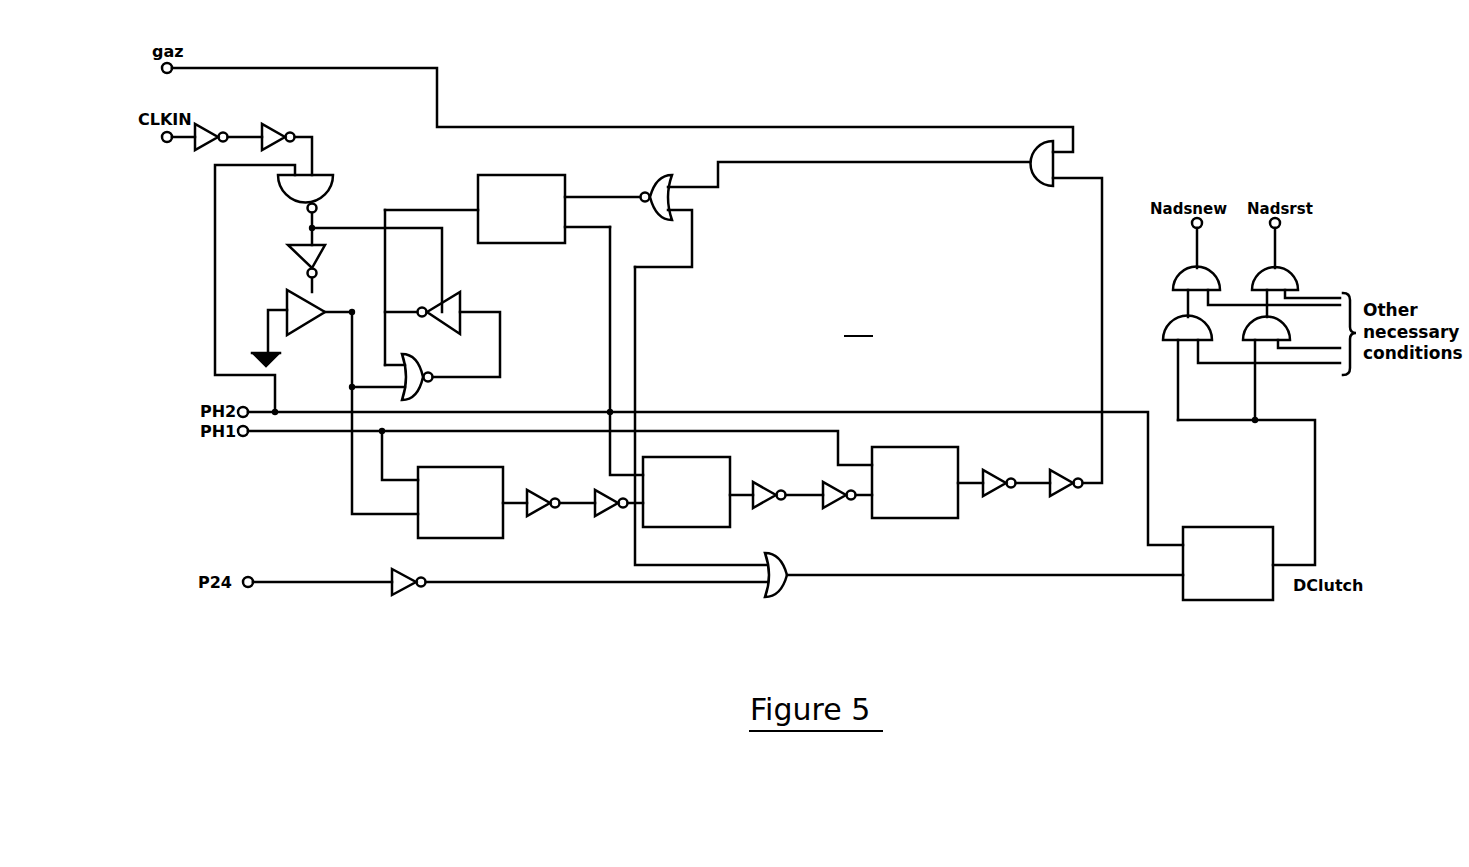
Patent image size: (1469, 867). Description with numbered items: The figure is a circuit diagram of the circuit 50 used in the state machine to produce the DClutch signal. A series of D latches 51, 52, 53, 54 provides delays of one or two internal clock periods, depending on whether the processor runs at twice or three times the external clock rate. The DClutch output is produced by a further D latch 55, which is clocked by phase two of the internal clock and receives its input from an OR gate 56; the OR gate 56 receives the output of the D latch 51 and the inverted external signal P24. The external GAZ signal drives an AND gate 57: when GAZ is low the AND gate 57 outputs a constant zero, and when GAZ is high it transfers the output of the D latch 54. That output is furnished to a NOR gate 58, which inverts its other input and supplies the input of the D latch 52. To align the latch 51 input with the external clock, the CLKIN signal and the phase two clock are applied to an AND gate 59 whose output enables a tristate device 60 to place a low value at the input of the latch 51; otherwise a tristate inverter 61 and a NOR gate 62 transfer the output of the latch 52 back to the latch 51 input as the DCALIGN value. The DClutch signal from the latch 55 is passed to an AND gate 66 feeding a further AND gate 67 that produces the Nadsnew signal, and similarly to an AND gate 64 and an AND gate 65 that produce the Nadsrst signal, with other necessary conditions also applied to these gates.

The circuit 50 is at (858, 326).
The D latch 51 is at (480, 480).
The D latch 52 is at (522, 188).
The D latch 53 is at (682, 518).
The D latch 54 is at (923, 505).
The D latch 55 is at (1237, 538).
The OR gate 56 is at (783, 588).
The AND gate 57 is at (1040, 172).
The NOR gate 58 is at (658, 188).
The AND gate 59 is at (320, 187).
The tristate device 60 is at (295, 308).
The tristate inverter 61 is at (447, 313).
The NOR gate 62 is at (413, 380).
The AND gate 64 is at (1268, 332).
The AND gate 65 is at (1278, 285).
The AND gate 66 is at (1180, 332).
The AND gate 67 is at (1184, 283).